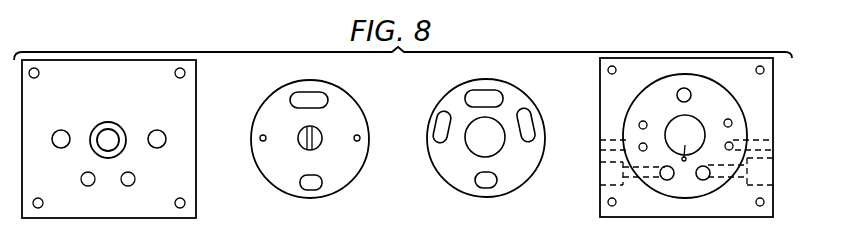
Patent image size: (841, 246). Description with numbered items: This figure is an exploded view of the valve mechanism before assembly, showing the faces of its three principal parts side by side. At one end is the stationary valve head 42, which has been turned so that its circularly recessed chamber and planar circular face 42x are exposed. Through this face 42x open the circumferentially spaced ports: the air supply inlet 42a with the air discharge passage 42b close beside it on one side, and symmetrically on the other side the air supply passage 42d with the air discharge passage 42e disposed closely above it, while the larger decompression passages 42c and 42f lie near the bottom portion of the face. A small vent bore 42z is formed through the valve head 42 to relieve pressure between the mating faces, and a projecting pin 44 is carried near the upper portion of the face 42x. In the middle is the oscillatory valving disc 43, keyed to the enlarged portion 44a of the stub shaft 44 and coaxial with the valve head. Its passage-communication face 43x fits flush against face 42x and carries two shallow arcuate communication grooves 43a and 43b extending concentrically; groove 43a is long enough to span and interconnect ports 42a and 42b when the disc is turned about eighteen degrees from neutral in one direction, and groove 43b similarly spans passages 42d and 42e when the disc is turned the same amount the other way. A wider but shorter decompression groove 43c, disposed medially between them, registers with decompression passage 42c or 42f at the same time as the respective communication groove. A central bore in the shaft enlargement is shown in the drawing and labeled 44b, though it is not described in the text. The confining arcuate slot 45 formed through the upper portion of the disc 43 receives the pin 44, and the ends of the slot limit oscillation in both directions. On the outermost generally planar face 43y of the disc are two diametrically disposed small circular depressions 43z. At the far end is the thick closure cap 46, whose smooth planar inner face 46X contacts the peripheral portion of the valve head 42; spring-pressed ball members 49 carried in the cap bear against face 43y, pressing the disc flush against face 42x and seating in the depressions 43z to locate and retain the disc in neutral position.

The stationary valve head 42 is at (767, 192).
The air supply inlet 42a is at (732, 146).
The air discharge passage 42b is at (732, 123).
The decompression passage 42c is at (703, 180).
The air supply passage 42d is at (643, 147).
The air discharge passage 42e is at (640, 122).
The decompression passage 42f is at (669, 180).
The planar circular face 42x is at (723, 100).
The vent bore 42z is at (685, 138).
The oscillatory valving disc 43 is at (385, 130).
The arcuate communication groove 43a is at (438, 123).
The arcuate communication groove 43b is at (527, 122).
The decompression groove 43c is at (477, 183).
The passage-communication face 43x is at (515, 95).
The outermost planar face 43y is at (270, 113).
The circular depressions 43z is at (260, 137).
The stub shaft / projecting pin 44 is at (300, 139).
The enlarged portion of stub shaft 44a is at (498, 146).
The shaft slot 44b is at (311, 127).
The arcuate slot 45 is at (313, 94).
The closure cap 46 is at (109, 139).
The planar inner face 46X is at (77, 108).
The ball members 49 is at (58, 146).